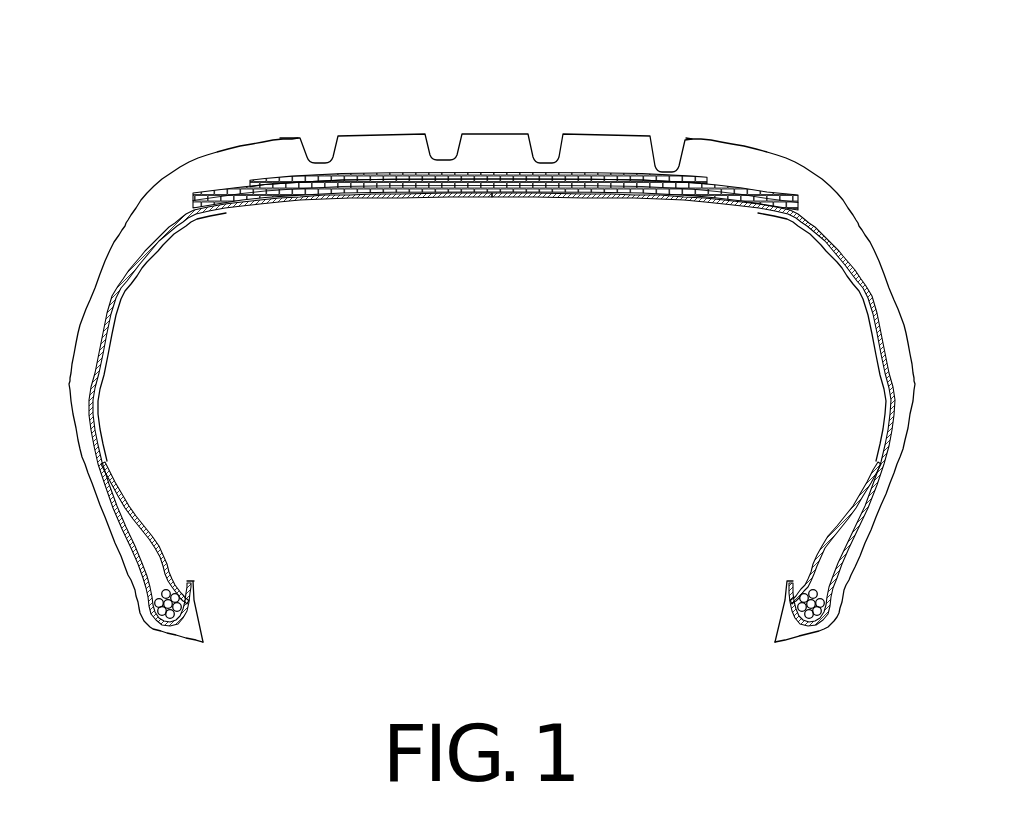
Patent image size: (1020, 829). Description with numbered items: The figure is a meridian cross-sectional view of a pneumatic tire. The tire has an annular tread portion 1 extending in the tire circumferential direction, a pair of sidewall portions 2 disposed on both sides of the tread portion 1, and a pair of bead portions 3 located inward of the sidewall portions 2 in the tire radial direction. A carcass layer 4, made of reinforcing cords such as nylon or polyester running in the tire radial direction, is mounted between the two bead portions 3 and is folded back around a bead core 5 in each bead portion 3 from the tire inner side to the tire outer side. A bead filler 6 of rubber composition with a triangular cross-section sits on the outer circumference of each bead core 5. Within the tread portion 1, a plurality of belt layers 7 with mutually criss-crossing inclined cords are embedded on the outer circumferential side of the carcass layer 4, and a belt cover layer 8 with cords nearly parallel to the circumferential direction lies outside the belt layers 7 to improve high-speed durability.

The tread portion 1 is at (607, 130).
The sidewall portion 2 is at (101, 264).
The bead portion 3 is at (131, 601).
The carcass layer 4 is at (823, 231).
The bead core 5 is at (170, 583).
The bead filler 6 is at (167, 562).
The belt layer 7 is at (618, 177).
The belt cover layer 8 is at (255, 177).